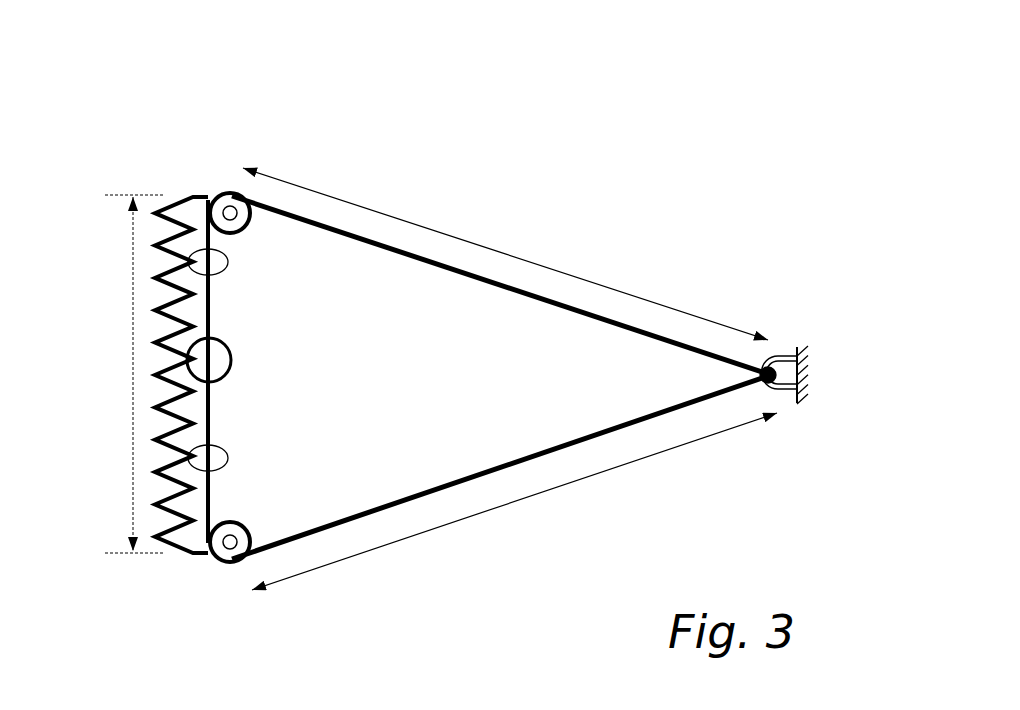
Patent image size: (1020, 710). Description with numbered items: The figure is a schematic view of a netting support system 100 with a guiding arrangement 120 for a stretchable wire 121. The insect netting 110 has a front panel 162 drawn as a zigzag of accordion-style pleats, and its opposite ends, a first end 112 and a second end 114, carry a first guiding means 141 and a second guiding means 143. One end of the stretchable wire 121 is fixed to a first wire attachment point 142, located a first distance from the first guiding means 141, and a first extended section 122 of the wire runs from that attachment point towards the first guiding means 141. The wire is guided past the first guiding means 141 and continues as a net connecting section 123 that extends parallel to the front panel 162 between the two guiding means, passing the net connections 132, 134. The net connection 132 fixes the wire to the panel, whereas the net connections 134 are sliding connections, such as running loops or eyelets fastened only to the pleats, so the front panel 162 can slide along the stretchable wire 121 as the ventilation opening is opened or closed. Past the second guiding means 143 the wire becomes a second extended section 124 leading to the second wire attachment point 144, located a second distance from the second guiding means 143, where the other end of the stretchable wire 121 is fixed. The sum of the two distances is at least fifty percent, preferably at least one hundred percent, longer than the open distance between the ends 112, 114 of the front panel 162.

The netting support system 100 is at (213, 88).
The insect netting 110 is at (165, 340).
The first end of the front panel 112 is at (165, 560).
The second end of the front panel 114 is at (166, 196).
The guiding arrangement 120 is at (655, 207).
The stretchable wire 121 is at (673, 337).
The first extended section 122 is at (393, 510).
The net connecting section 123 is at (210, 421).
The second extended section 124 is at (433, 257).
The net connection 132 is at (233, 359).
The sliding net connection 134 is at (230, 263).
The first guiding means 141 is at (247, 523).
The first wire attachment point 142 is at (784, 356).
The second guiding means 143 is at (250, 218).
The second wire attachment point 144 is at (802, 375).
The front panel 162 is at (136, 423).